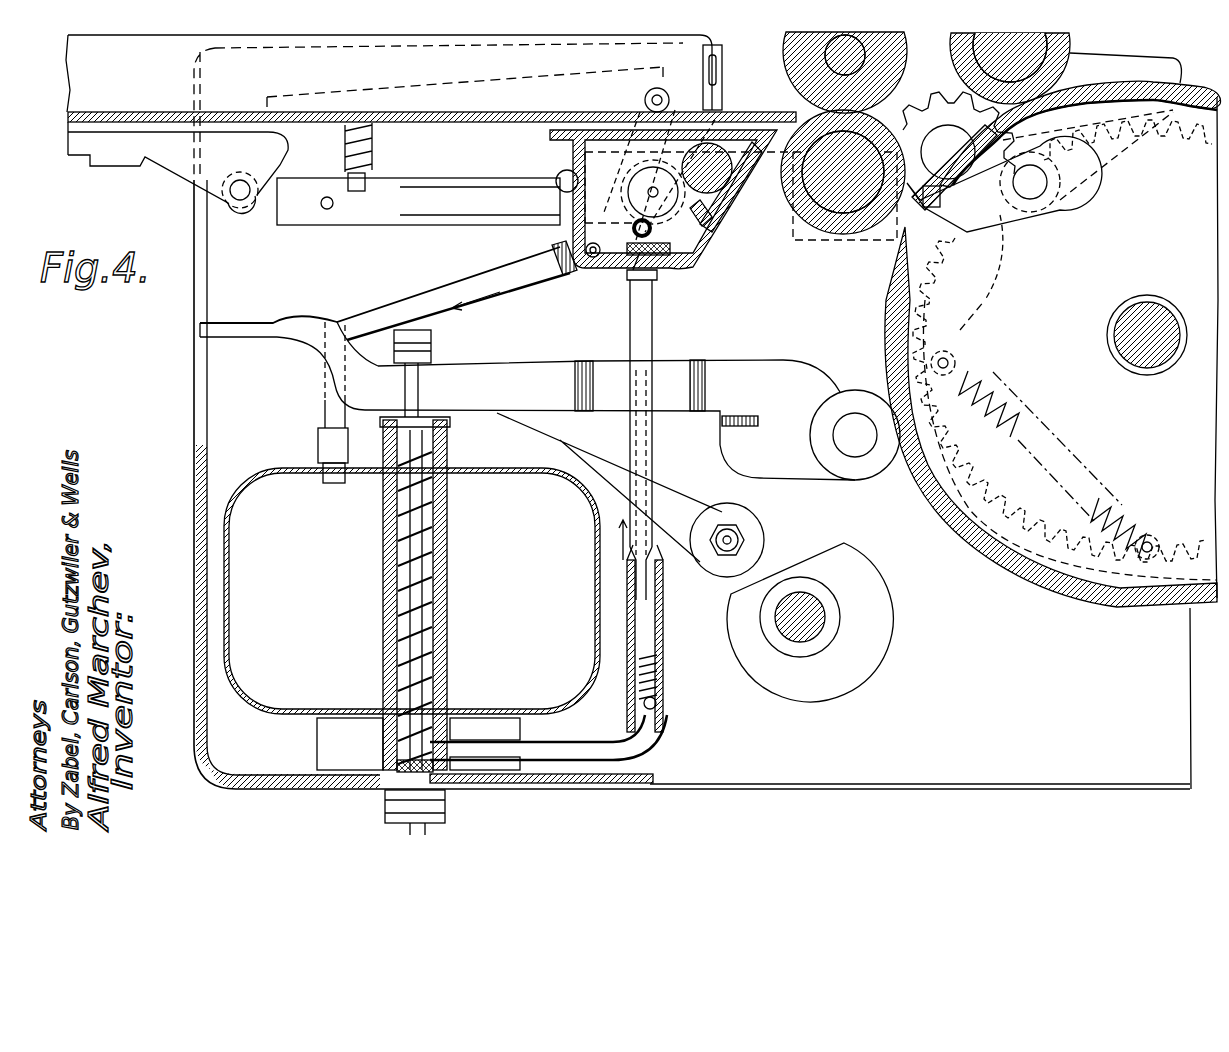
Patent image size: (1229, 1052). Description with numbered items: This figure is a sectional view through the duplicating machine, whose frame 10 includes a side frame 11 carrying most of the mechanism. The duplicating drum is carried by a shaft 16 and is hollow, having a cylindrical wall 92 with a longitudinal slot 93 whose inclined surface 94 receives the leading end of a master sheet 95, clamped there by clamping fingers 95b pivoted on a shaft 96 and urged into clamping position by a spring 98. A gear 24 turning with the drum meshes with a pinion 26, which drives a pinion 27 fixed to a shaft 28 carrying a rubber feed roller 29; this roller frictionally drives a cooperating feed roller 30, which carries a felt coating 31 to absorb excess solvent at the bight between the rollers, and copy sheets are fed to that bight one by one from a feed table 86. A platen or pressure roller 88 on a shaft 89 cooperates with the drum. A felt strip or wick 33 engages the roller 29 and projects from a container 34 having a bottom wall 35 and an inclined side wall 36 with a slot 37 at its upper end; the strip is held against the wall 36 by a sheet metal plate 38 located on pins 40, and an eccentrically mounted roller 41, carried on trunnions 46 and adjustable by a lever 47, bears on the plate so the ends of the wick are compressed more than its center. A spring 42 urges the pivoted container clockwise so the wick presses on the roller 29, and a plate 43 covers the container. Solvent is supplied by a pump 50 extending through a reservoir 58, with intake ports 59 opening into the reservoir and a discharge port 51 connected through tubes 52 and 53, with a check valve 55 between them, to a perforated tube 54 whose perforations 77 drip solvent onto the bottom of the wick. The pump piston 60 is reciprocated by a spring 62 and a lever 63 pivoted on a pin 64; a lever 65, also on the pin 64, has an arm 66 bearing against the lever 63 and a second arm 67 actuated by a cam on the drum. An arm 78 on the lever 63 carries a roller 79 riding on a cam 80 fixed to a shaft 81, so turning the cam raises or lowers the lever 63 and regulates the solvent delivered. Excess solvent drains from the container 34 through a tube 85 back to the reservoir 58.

The frame 10 is at (184, 315).
The side frame 11 is at (235, 378).
The shaft 16 is at (1148, 345).
The gear 24 is at (1052, 560).
The pinion 26 is at (930, 122).
The pinion 27 is at (757, 232).
The shaft 28 is at (858, 220).
The feed roller 29 is at (833, 232).
The feed roller 30 is at (903, 48).
The felt coating 31 is at (795, 42).
The felt strip 33 is at (636, 238).
The container 34 is at (573, 240).
The bottom wall 35 is at (700, 262).
The inclined side wall 36 is at (760, 205).
The slot 37 is at (758, 135).
The sheet metal plate 38 is at (700, 235).
The pins 40 is at (698, 250).
The eccentrically mounted roller 41 is at (712, 142).
The spring 42 is at (556, 184).
The plate 43 is at (555, 135).
The trunnions 46 is at (716, 222).
The lever 47 is at (735, 72).
The pump 50 is at (448, 620).
The discharge port 51 is at (450, 727).
The tube 52 is at (662, 742).
The tube 53 is at (650, 327).
The perforated tube 54 is at (588, 270).
The check valve 55 is at (665, 682).
The reservoir 58 is at (275, 712).
The intake ports 59 is at (395, 675).
The piston 60 is at (385, 735).
The spring 62 is at (448, 518).
The lever 63 is at (597, 365).
The pin 64 is at (856, 440).
The lever 65 is at (921, 509).
The arm 66 is at (722, 437).
The second arm 67 is at (1137, 565).
The perforations 77 is at (670, 268).
The arm 78 is at (543, 432).
The roller 79 is at (760, 522).
The cam 80 is at (868, 657).
The shaft 81 is at (808, 625).
The tube 85 is at (426, 300).
The feed table 86 is at (400, 112).
The pressure roller 88 is at (1062, 72).
The shaft 89 is at (1040, 32).
The cylindrical wall 92 is at (1195, 85).
The slot 93 is at (978, 215).
The inclined surface 94 is at (960, 262).
The master sheet 95 is at (883, 320).
The clamping fingers 95b is at (965, 240).
The shaft 96 is at (1047, 183).
The spring 98 is at (1025, 400).